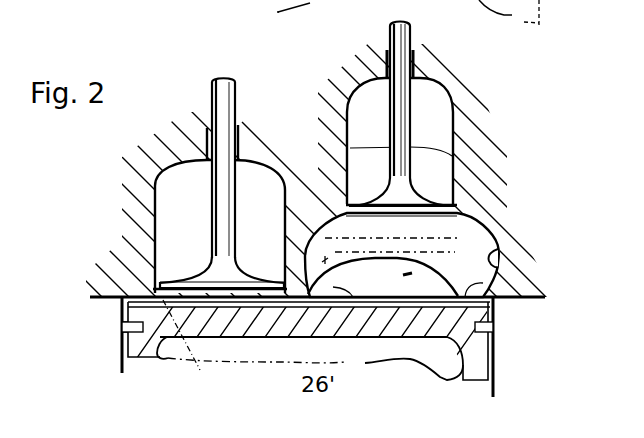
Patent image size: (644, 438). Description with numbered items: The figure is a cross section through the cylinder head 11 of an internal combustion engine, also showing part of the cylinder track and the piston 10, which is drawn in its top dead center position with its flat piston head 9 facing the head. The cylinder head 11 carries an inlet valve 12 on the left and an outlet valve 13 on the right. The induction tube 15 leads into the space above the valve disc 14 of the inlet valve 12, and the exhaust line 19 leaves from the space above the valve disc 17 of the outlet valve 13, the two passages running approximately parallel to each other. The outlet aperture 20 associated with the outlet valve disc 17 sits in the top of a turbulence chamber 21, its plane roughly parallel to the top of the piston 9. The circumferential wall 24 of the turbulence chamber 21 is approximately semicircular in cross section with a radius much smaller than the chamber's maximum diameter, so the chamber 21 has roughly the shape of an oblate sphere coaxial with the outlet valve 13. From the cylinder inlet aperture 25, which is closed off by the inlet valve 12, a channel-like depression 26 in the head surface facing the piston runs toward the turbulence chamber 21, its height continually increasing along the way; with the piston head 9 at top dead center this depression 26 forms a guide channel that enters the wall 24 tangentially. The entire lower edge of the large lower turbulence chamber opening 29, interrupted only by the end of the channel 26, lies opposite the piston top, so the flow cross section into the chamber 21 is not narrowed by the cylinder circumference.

The piston head 9 is at (192, 292).
The piston 10 is at (414, 352).
The cylinder head 11 is at (127, 176).
The inlet valve 12 is at (228, 97).
The outlet valve 13 is at (402, 40).
The valve disc 14 is at (247, 285).
The induction tube 15 is at (165, 200).
The valve disc 17 is at (452, 203).
The exhaust line 19 is at (437, 103).
The outlet aperture 20 is at (402, 176).
The turbulence chamber 21 is at (387, 248).
The circumferential wall 24 is at (489, 253).
The cylinder inlet aperture 25 is at (192, 348).
The channel-like depression 26 is at (368, 226).
The turbulence chamber opening 29 is at (492, 284).